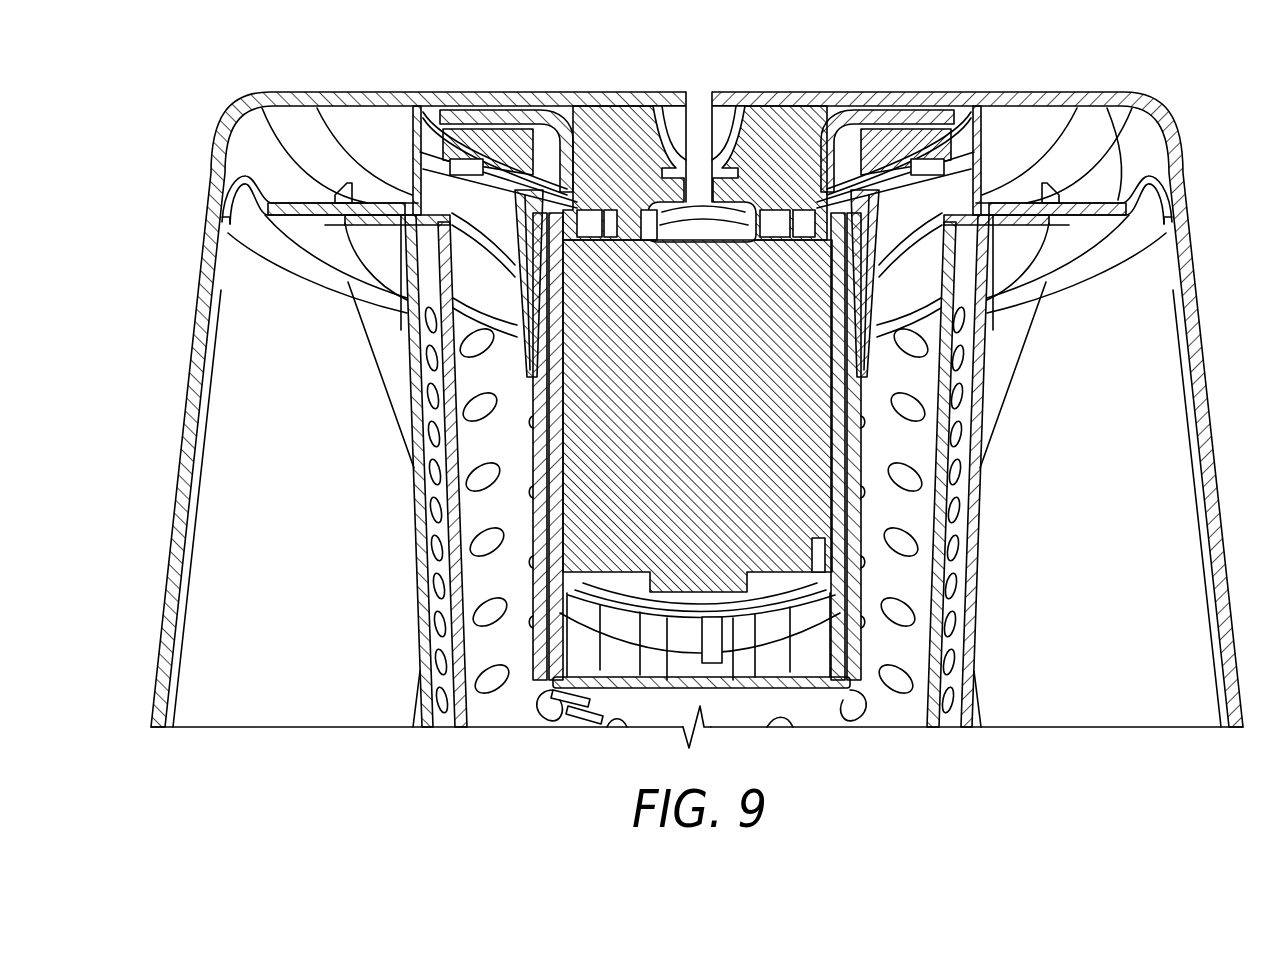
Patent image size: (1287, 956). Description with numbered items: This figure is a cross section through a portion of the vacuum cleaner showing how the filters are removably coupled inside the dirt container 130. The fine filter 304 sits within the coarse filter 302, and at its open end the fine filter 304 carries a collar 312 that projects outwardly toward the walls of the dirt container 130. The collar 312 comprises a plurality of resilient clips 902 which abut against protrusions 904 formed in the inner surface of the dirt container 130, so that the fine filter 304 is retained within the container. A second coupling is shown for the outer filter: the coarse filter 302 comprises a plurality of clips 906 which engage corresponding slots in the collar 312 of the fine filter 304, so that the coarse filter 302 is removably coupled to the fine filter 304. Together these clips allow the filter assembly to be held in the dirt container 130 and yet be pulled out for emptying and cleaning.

The dirt container 130 is at (183, 486).
The coarse filter 302 is at (978, 578).
The fine filter 304 is at (968, 484).
The collar 312 is at (1107, 108).
The resilient clips 902 is at (222, 182).
The protrusions 904 is at (220, 248).
The clips 906 is at (337, 192).